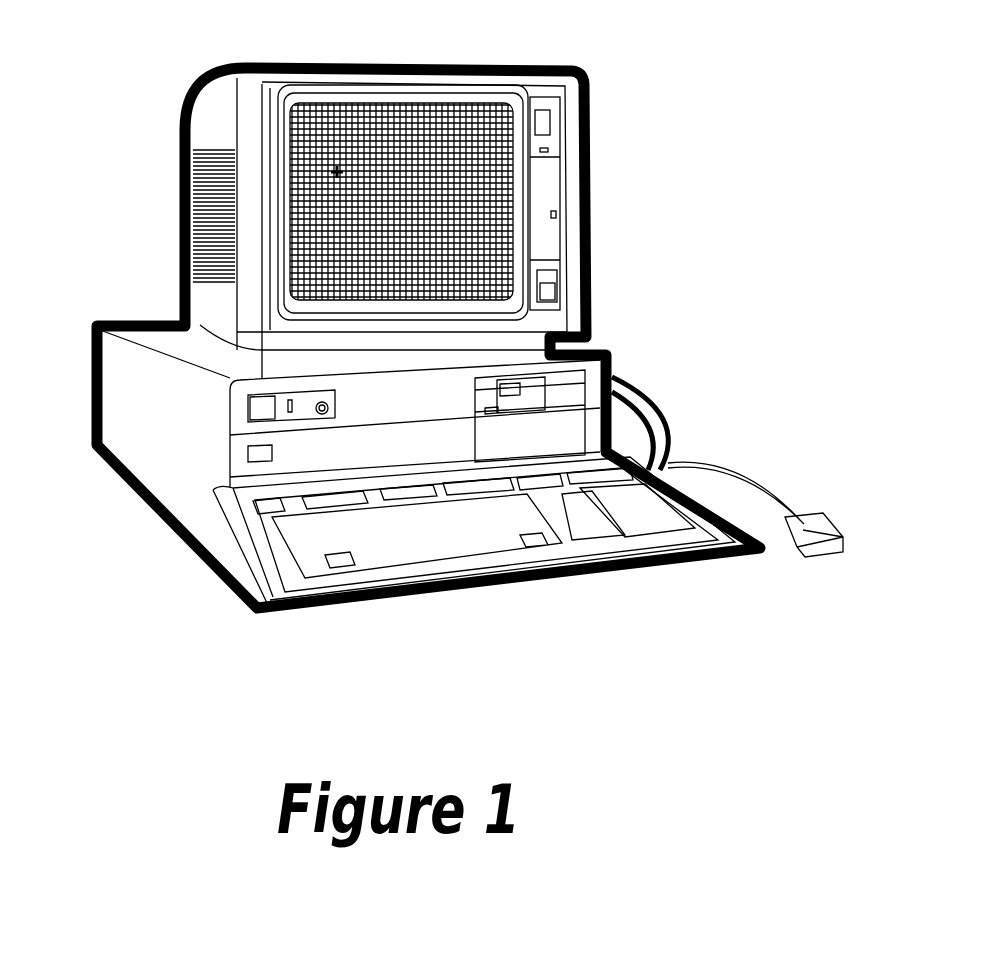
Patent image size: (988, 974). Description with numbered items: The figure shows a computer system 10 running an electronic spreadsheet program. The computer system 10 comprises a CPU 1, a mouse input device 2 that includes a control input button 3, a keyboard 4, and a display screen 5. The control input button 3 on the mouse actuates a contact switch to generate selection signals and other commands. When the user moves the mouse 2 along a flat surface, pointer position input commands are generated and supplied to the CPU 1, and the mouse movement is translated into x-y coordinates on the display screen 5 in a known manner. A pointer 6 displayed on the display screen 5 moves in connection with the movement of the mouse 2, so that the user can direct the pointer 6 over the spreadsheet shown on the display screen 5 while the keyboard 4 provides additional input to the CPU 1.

The computer system 10 is at (108, 115).
The CPU 1 is at (247, 453).
The mouse input device 2 is at (827, 538).
The control input button 3 is at (793, 518).
The keyboard 4 is at (465, 572).
The display screen 5 is at (460, 225).
The pointer 6 is at (336, 178).